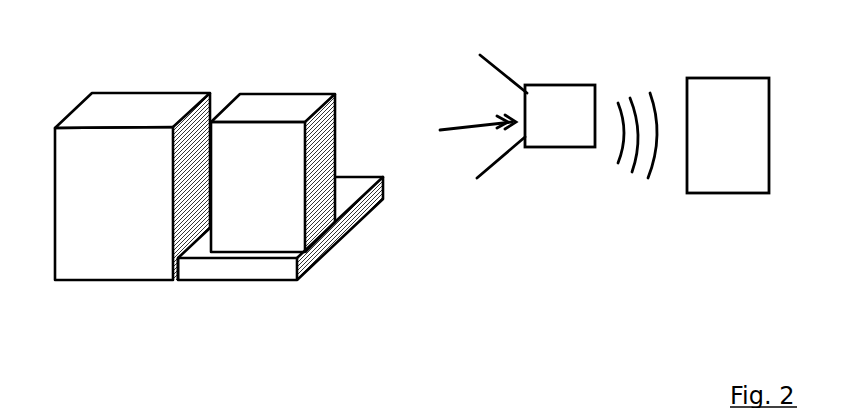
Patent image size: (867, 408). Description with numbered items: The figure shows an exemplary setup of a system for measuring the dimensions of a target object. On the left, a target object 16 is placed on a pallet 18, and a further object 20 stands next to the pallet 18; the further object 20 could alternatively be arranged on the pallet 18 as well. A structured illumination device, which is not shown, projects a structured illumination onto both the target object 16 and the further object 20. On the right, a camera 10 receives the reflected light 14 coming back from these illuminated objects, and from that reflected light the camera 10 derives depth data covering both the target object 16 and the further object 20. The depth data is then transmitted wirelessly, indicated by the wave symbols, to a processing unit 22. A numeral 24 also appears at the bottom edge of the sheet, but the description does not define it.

The camera 10 is at (575, 127).
The reflected light 14 is at (465, 132).
The target object 16 is at (270, 105).
The pallet 18 is at (352, 217).
The further object 20 is at (130, 108).
The processing unit 22 is at (740, 158).
The signal path 24 is at (533, 400).